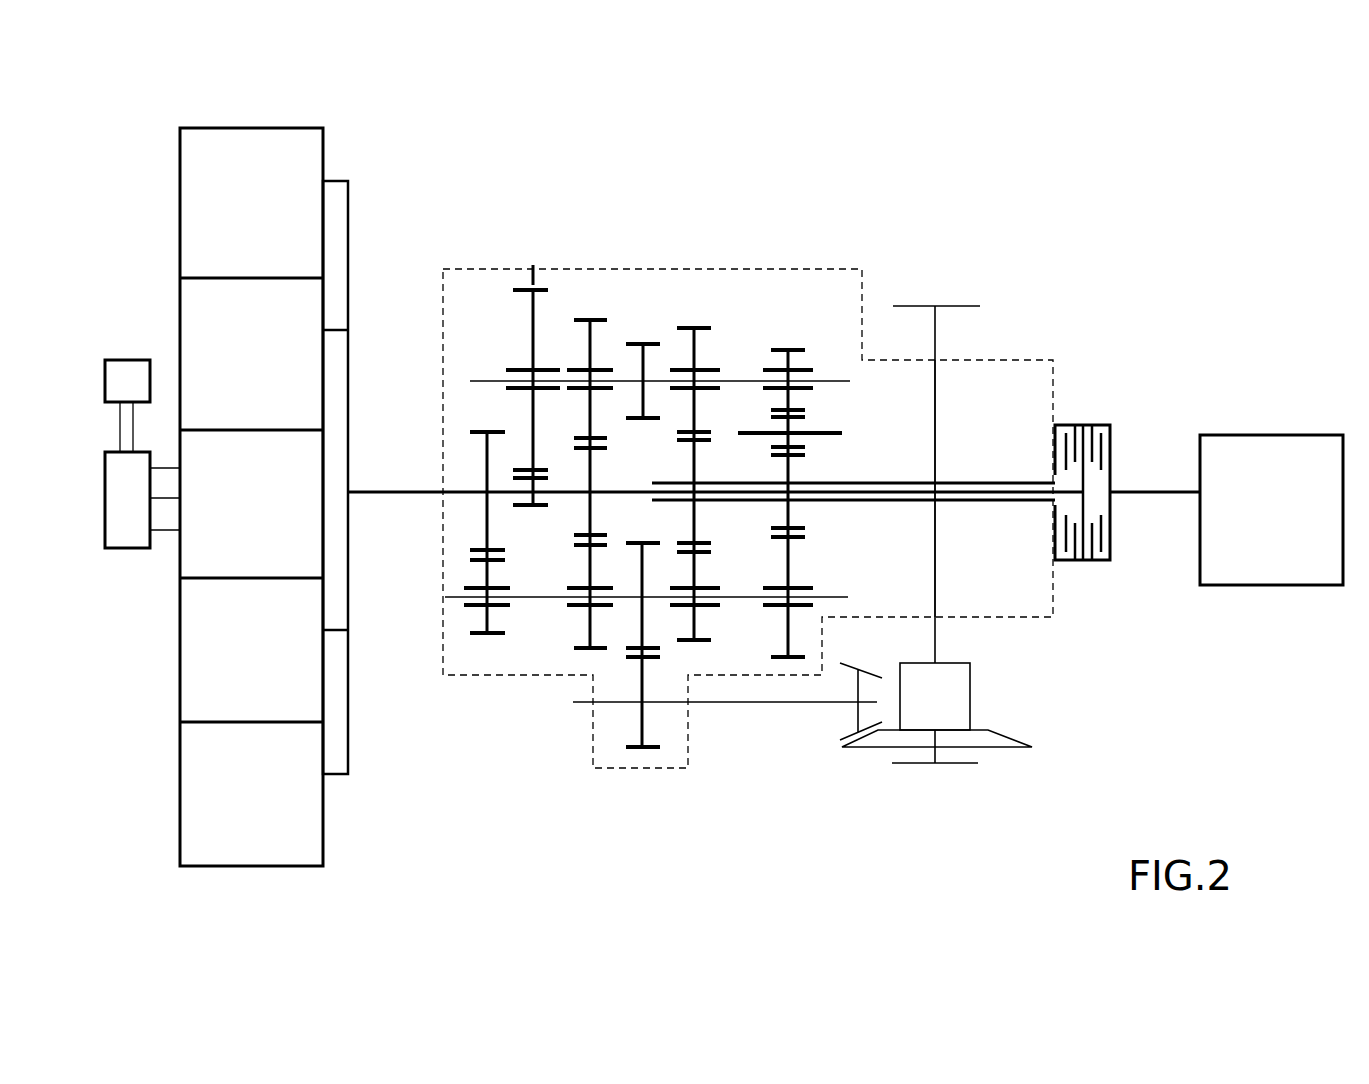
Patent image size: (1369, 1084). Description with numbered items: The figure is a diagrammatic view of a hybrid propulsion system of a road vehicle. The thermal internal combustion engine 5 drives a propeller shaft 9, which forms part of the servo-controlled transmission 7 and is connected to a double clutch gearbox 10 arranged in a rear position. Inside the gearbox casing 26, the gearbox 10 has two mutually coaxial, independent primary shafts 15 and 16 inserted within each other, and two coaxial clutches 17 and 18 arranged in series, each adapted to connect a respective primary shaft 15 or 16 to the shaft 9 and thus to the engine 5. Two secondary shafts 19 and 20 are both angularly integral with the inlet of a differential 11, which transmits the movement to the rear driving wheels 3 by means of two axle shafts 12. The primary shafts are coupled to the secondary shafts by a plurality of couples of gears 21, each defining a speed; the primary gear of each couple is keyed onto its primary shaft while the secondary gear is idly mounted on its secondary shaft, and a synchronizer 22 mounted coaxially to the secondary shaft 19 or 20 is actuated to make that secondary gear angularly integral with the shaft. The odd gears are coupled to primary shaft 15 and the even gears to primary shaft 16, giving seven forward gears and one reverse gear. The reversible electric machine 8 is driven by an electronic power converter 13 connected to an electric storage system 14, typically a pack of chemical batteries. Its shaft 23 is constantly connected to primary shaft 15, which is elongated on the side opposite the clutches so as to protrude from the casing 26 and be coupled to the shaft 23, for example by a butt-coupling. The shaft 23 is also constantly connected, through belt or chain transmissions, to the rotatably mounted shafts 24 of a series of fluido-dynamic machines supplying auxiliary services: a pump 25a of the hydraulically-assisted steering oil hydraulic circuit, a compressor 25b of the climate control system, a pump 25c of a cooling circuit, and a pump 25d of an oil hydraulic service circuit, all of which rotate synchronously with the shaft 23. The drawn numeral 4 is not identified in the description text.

The rear driving wheels 3 is at (958, 306).
The drive axle 4 is at (1203, 668).
The thermal internal combustion engine 5 is at (1271, 510).
The servo-controlled transmission 7 is at (852, 562).
The reversible electric machine 8 is at (251, 497).
The propeller shaft 9 is at (1140, 485).
The double clutch gearbox 10 is at (647, 435).
The differential 11 is at (1010, 720).
The axle shafts 12 is at (938, 348).
The electronic power converter 13 is at (142, 500).
The electric storage system 14 is at (127, 406).
The primary shaft 15 is at (567, 497).
The primary shaft 16 is at (768, 503).
The clutch 17 is at (1089, 415).
The clutch 18 is at (1079, 572).
The secondary shaft 19 is at (490, 378).
The secondary shaft 20 is at (532, 600).
The couples of gears 21 is at (515, 262).
The synchronizer 22 is at (545, 370).
The shaft of the electric machine 23 is at (406, 494).
The shafts of the fluido-dynamic machines 24 is at (340, 181).
The pump of the hydraulically-assisted steering oil hydraulic circuit 25a is at (251, 231).
The compressor of the climate control system 25b is at (251, 381).
The pump of a cooling circuit 25c is at (251, 624).
The pump of the oil hydraulic service circuit 25d is at (251, 767).
The gearbox casing 26 is at (830, 290).